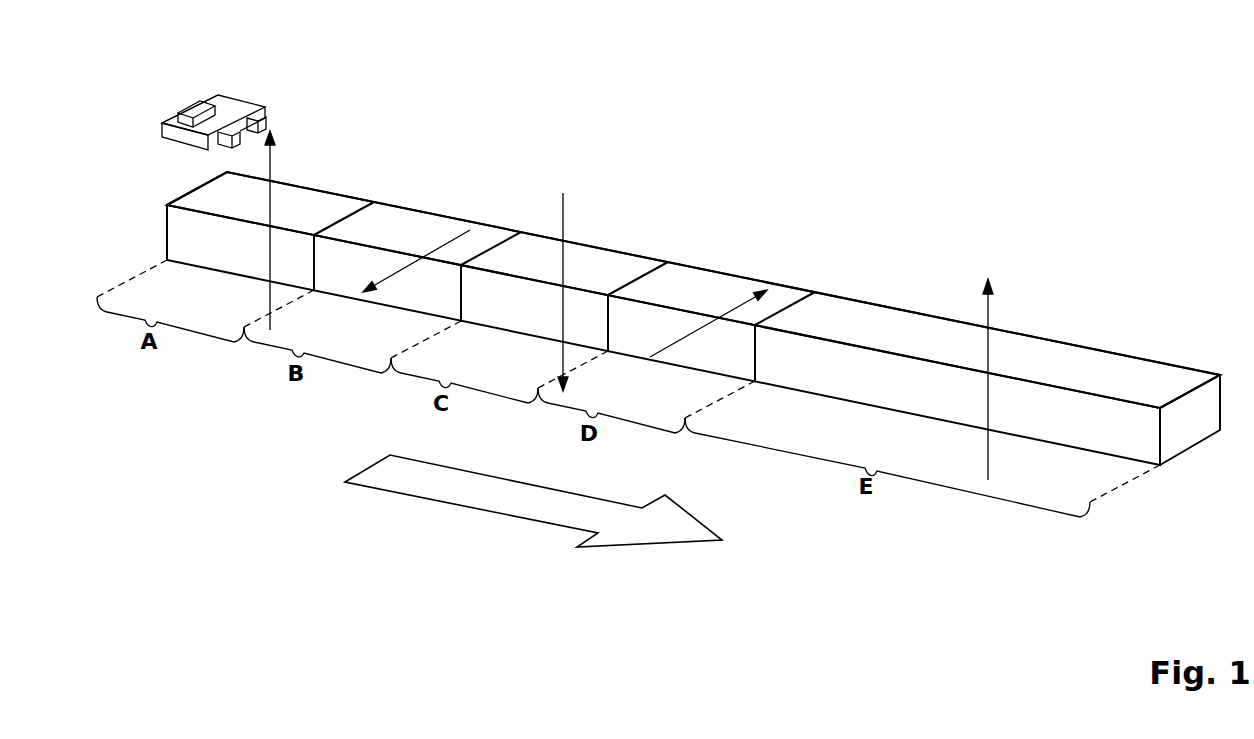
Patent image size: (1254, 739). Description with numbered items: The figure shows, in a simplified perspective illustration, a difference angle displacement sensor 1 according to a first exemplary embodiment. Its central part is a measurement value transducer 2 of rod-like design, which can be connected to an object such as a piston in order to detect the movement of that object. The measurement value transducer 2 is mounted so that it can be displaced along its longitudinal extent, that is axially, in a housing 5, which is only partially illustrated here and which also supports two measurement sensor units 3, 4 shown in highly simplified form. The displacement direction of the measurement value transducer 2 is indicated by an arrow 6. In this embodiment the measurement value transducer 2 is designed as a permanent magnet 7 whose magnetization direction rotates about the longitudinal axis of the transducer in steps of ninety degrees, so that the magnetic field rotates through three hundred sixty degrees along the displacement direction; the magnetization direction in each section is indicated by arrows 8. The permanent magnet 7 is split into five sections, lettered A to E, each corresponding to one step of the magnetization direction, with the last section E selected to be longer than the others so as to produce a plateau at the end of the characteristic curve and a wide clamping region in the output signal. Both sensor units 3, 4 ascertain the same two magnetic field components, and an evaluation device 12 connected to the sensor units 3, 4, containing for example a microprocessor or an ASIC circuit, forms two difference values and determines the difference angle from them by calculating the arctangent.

The displacement sensor 1 is at (655, 306).
The measurement value transducer 2 is at (533, 233).
The measurement sensor unit 3 is at (257, 110).
The measurement sensor unit 4 is at (231, 124).
The housing 5 is at (170, 118).
The arrow 6 is at (472, 493).
The permanent magnet 7 is at (632, 263).
The arrows 8 is at (274, 167).
The evaluation device 12 is at (196, 98).